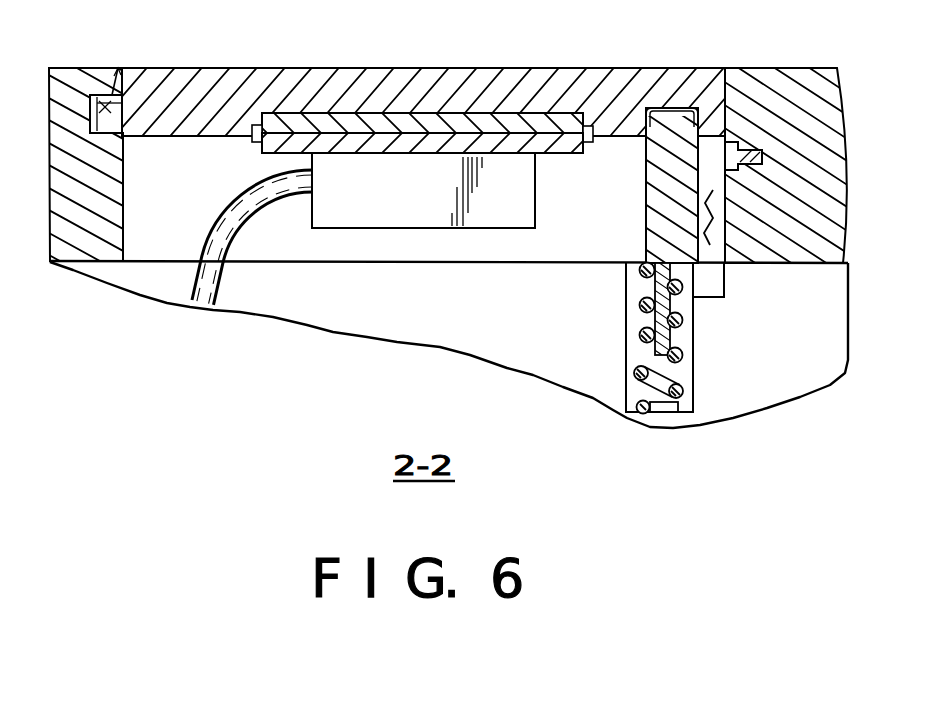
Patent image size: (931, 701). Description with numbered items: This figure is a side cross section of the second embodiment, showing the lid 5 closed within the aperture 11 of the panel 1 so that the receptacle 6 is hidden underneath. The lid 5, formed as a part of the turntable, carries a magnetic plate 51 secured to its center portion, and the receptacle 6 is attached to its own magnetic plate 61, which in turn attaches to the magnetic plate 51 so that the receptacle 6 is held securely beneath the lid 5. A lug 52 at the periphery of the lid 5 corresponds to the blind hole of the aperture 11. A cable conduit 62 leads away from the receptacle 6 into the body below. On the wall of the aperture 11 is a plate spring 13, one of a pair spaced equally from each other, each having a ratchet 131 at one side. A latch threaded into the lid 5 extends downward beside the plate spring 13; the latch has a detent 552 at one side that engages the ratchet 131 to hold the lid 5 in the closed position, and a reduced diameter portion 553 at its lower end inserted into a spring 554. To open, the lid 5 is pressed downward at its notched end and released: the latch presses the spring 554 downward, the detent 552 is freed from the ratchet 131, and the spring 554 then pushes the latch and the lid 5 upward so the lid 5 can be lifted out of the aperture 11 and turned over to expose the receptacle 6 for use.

The panel 1 is at (772, 93).
The lid 5 is at (572, 87).
The magnetic plate 51 is at (492, 68).
The lug 52 is at (90, 94).
The receptacle 6 is at (428, 217).
The magnetic plate 61 is at (342, 140).
The conduit tube 62 is at (260, 223).
The aperture 11 is at (162, 247).
The plate spring 13 is at (727, 247).
The ratchet 131 is at (698, 266).
The detent 552 is at (697, 223).
The reduced diameter portion 553 is at (660, 288).
The spring 554 is at (645, 338).